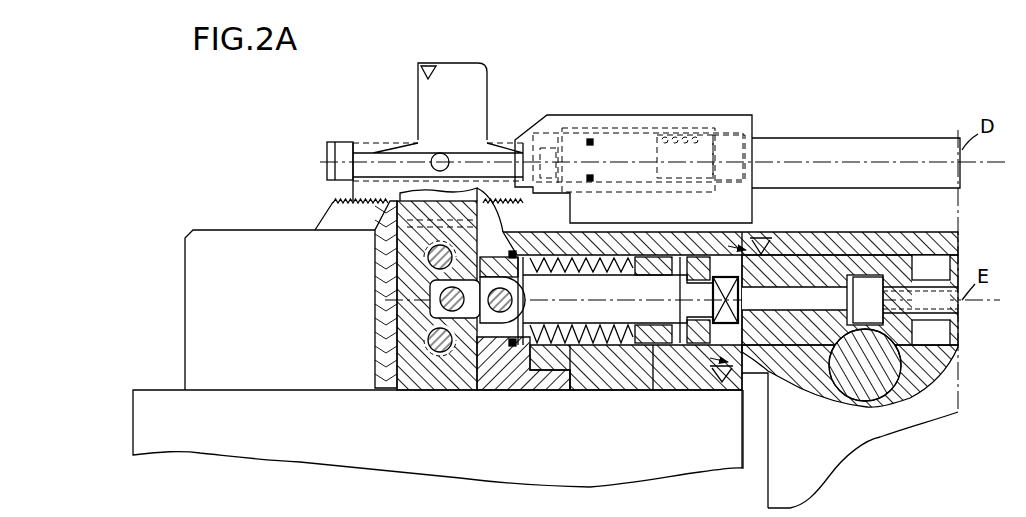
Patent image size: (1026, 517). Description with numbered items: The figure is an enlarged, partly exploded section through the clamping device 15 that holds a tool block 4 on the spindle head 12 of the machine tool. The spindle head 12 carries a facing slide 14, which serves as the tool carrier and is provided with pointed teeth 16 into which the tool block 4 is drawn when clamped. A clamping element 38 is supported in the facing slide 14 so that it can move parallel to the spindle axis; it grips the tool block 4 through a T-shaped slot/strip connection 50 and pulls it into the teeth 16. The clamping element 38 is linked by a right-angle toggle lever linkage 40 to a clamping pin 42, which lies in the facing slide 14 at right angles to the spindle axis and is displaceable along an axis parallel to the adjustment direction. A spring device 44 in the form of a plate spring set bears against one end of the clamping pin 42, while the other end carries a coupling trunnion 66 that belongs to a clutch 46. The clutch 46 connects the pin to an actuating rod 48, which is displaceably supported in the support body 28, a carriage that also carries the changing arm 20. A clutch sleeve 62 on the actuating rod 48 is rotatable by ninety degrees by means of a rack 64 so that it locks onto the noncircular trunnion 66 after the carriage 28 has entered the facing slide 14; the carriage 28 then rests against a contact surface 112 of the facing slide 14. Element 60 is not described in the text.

The tool block 4 is at (490, 60).
The changing arm 20 is at (863, 135).
The pointed teeth 16 is at (347, 206).
The facing slide 14 is at (185, 283).
The T-shaped slot/strip connection 50 is at (390, 224).
The contact surface 112 is at (749, 242).
The clutch sleeve 62 is at (798, 273).
The actuating rod 48 is at (947, 318).
The coupling trunnion 66 is at (740, 304).
The rack 64 is at (873, 373).
The clutch 46 is at (766, 348).
The clamping element 38 is at (400, 385).
The toggle lever linkage 40 is at (453, 370).
The piston rod head 60 is at (493, 342).
The spring device 44 is at (598, 345).
The clamping pin 42 is at (647, 350).
The clamping device 15 is at (432, 405).
The spindle head 12 is at (131, 438).
The support body 28 is at (843, 447).